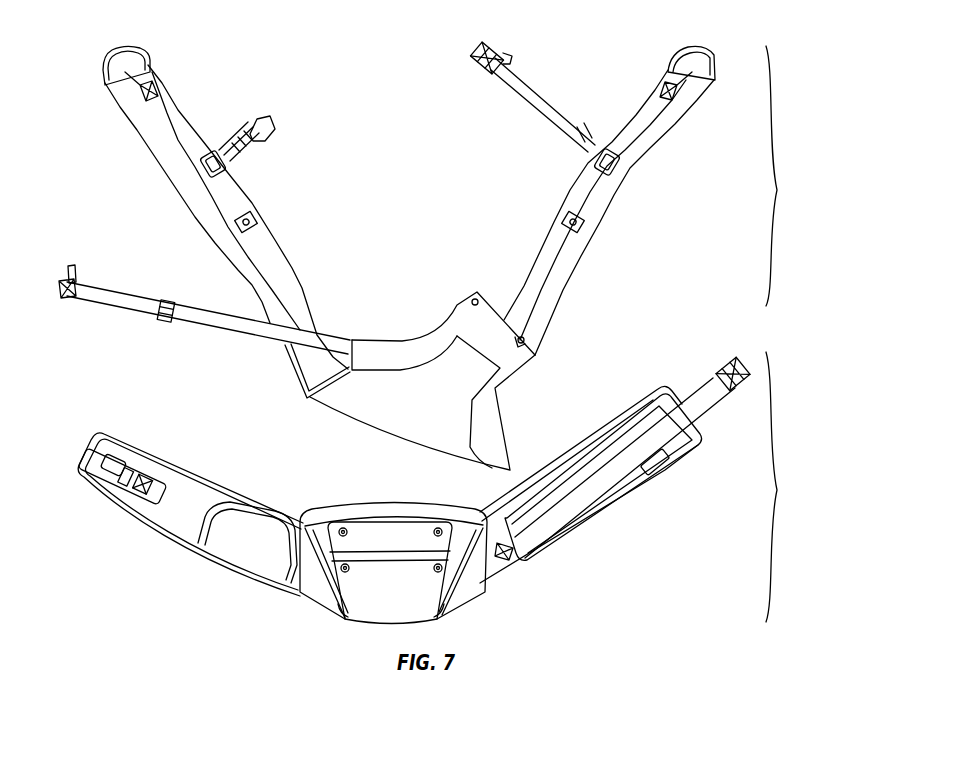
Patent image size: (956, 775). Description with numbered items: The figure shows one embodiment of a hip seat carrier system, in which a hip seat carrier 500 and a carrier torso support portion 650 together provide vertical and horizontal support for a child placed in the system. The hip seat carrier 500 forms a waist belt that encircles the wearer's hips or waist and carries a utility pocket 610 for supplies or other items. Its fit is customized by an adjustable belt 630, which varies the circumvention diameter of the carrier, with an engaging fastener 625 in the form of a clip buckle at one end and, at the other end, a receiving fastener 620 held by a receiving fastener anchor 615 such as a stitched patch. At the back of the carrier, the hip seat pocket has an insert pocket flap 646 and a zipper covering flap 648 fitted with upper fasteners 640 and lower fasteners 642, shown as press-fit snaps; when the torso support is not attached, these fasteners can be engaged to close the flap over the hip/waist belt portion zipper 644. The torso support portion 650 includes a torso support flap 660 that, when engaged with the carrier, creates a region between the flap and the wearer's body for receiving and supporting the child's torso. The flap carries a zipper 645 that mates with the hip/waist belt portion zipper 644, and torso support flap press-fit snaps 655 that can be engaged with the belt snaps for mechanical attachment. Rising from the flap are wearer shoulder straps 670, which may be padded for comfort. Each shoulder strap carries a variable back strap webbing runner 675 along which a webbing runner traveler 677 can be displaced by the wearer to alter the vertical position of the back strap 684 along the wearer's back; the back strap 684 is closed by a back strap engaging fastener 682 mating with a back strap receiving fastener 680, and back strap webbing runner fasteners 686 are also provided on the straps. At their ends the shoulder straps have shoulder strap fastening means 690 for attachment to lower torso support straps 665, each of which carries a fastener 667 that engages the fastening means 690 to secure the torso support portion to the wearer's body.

The hip seat carrier 500 is at (791, 487).
The utility pocket 610 is at (237, 550).
The receiving fastener anchor 615 is at (145, 478).
The receiving fastener 620 is at (116, 492).
The engaging fastener 625 is at (730, 358).
The adjustable belt 630 is at (698, 403).
The upper fasteners 640 is at (341, 529).
The lower fasteners 642 is at (336, 604).
The hip/waist belt portion zipper 644 is at (322, 518).
The zipper 645 is at (487, 320).
The insert pocket flap 646 is at (420, 509).
The zipper covering flap 648 is at (392, 538).
The carrier torso support portion 650 is at (791, 176).
The torso support flap press-fit snaps 655 is at (472, 296).
The torso support flap 660 is at (487, 416).
The lower torso support straps 665 is at (214, 313).
The fastener 667 is at (160, 321).
The wearer shoulder straps 670 is at (295, 278).
The variable back strap webbing runners 675 is at (177, 122).
The webbing runner travelers 677 is at (225, 166).
The back strap receiving fastener 680 is at (270, 130).
The back strap engaging fastener 682 is at (489, 50).
The back strap 684 is at (538, 112).
The back strap webbing runner fasteners 686 is at (252, 218).
The shoulder strap fastening means 690 is at (135, 65).